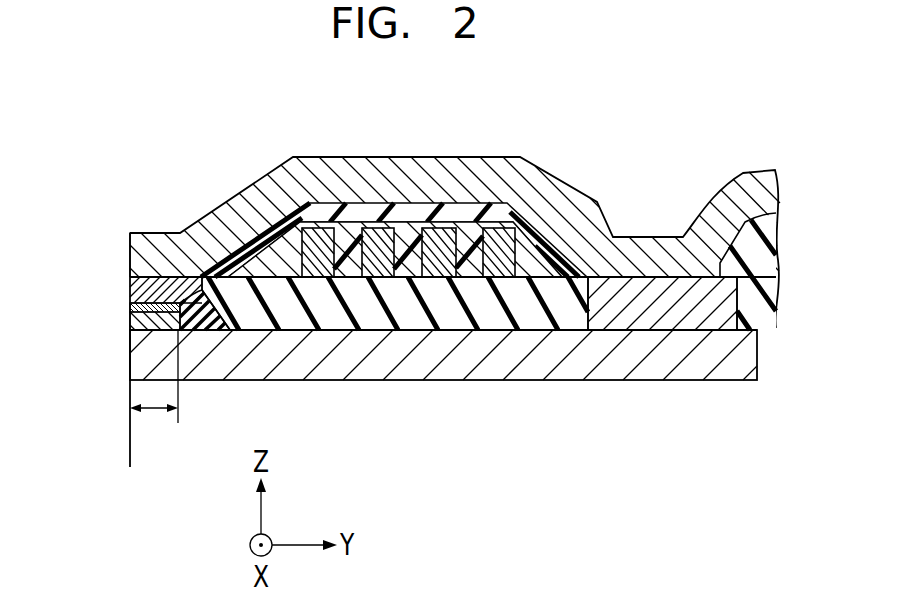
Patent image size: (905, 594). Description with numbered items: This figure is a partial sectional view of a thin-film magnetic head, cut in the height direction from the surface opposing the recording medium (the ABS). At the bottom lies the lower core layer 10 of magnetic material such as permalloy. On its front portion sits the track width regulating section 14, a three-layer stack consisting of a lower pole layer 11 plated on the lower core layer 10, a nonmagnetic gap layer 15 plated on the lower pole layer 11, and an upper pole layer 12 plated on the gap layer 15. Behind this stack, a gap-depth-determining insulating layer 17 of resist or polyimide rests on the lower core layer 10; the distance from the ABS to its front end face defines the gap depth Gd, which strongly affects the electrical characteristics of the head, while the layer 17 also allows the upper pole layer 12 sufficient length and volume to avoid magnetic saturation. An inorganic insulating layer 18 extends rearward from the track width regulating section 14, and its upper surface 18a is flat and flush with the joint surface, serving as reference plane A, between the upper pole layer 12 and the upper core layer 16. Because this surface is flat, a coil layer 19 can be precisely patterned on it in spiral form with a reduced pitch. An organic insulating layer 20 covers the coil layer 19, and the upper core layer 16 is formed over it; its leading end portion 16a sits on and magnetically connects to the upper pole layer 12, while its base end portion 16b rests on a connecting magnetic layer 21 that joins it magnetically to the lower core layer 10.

The lower core layer 10 is at (403, 350).
The lower pole layer 11 is at (158, 318).
The upper pole layer 12 is at (165, 285).
The track width regulating section 14 is at (102, 309).
The gap layer 15 is at (158, 307).
The upper core layer 16 is at (333, 190).
The leading end portion 16a is at (145, 252).
The base end portion 16b is at (644, 266).
The gap-depth-determining insulating layer 17 is at (200, 318).
The insulating layer 18 is at (520, 305).
The upper surface 18a is at (543, 230).
The coil layer 19 is at (412, 240).
The organic insulating layer 20 is at (255, 255).
The connecting magnetic layer 21 is at (655, 308).
The reference plane A is at (173, 265).
The gap depth Gd is at (154, 394).
The surface opposing a recording medium ABS is at (115, 449).